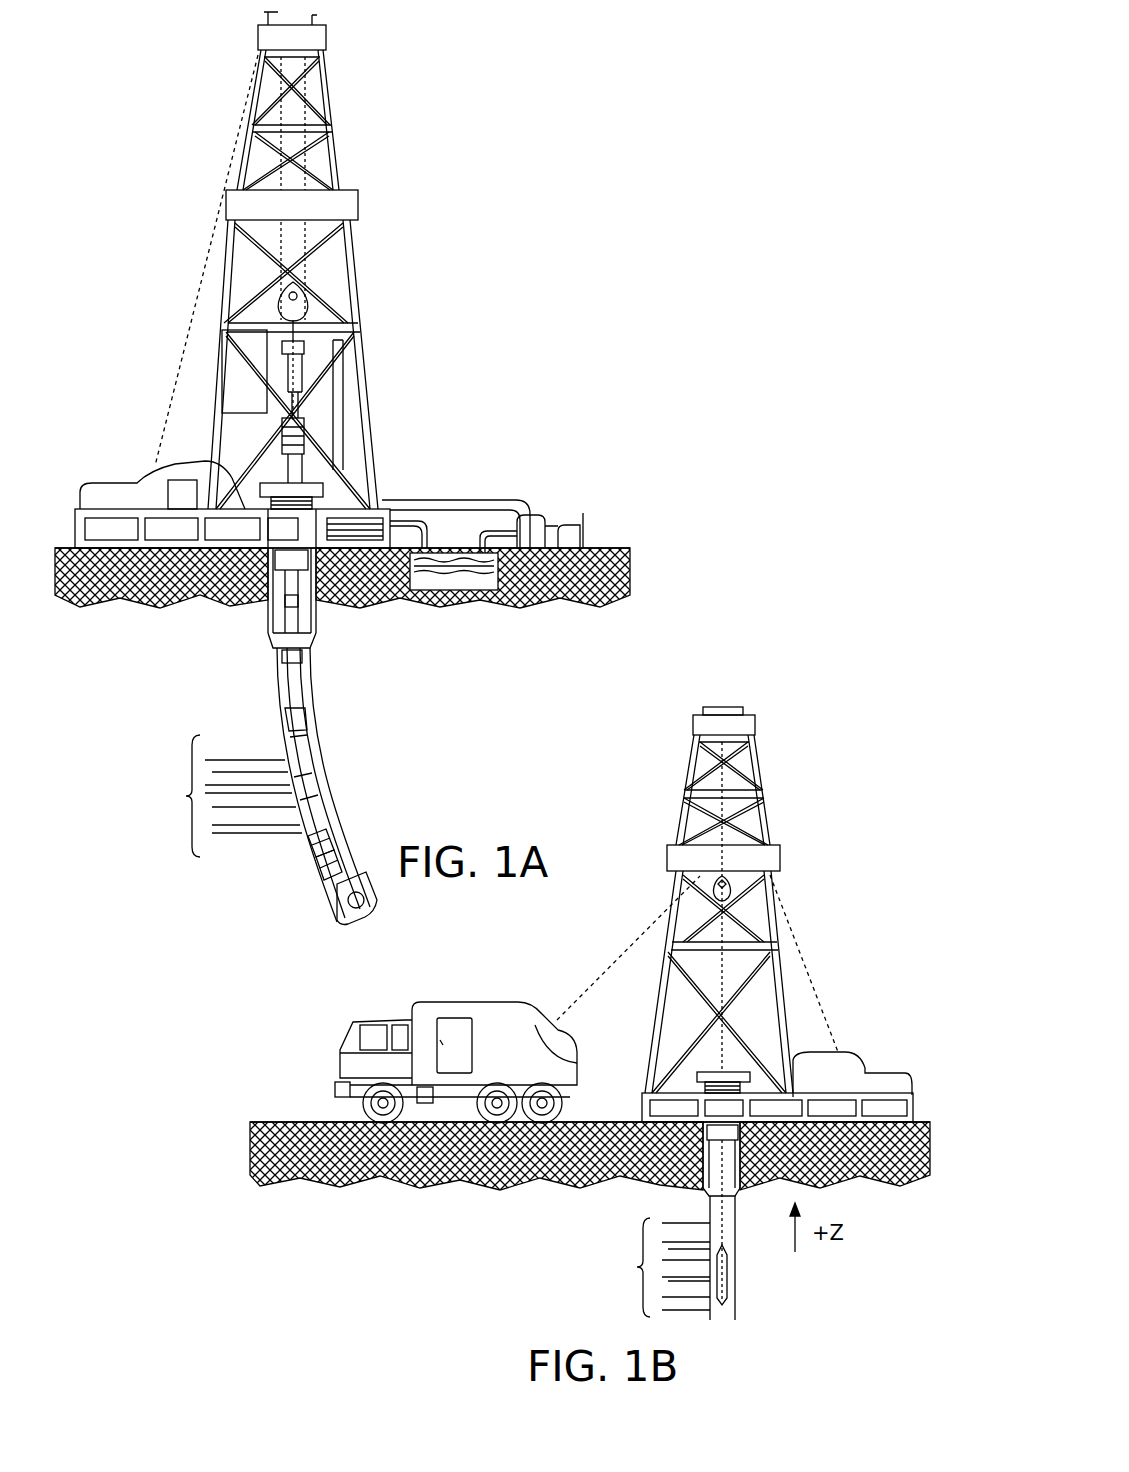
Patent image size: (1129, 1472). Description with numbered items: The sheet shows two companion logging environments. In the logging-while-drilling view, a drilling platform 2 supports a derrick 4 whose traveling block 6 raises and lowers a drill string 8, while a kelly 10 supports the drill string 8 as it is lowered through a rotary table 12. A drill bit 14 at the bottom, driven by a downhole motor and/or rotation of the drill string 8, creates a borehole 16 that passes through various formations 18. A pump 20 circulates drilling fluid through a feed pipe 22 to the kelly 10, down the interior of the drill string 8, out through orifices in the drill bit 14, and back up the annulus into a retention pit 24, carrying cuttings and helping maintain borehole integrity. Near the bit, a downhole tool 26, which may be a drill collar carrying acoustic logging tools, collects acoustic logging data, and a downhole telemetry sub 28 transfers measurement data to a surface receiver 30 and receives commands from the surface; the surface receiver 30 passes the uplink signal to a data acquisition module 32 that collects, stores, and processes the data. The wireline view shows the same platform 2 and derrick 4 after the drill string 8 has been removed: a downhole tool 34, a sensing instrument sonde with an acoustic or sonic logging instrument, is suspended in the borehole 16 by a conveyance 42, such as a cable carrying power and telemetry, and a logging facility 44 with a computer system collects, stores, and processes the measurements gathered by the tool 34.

In FIG. 1A, the drilling platform 2 is at (75, 536).
In FIG. 1B, the drilling platform 2 is at (643, 1115).
In FIG. 1A, the derrick 4 is at (343, 152).
In FIG. 1B, the derrick 4 is at (648, 1083).
In FIG. 1A, the traveling block 6 is at (310, 297).
In FIG. 1B, the traveling block 6 is at (763, 893).
In FIG. 1A, the drill string 8 is at (300, 690).
In FIG. 1A, the kelly 10 is at (296, 372).
In FIG. 1A, the rotary table 12 is at (342, 442).
In FIG. 1B, the rotary table 12 is at (707, 1067).
In FIG. 1A, the drill bit 14 is at (330, 913).
In FIG. 1A, the borehole 16 is at (318, 727).
In FIG. 1A, the formations 18 is at (231, 796).
In FIG. 1B, the formations 18 is at (658, 1267).
In FIG. 1A, the pump 20 is at (537, 512).
In FIG. 1A, the feed pipe 22 is at (445, 498).
In FIG. 1A, the retention pit 24 is at (448, 558).
In FIG. 1A, the downhole tool 26 is at (327, 882).
In FIG. 1A, the downhole telemetry sub 28 is at (313, 858).
In FIG. 1A, the surface receiver 30 is at (340, 437).
In FIG. 1A, the data acquisition module 32 is at (163, 498).
In FIG. 1B, the downhole tool 34 is at (728, 1273).
In FIG. 1B, the conveyance 42 is at (618, 963).
In FIG. 1B, the logging facility 44 is at (463, 1002).